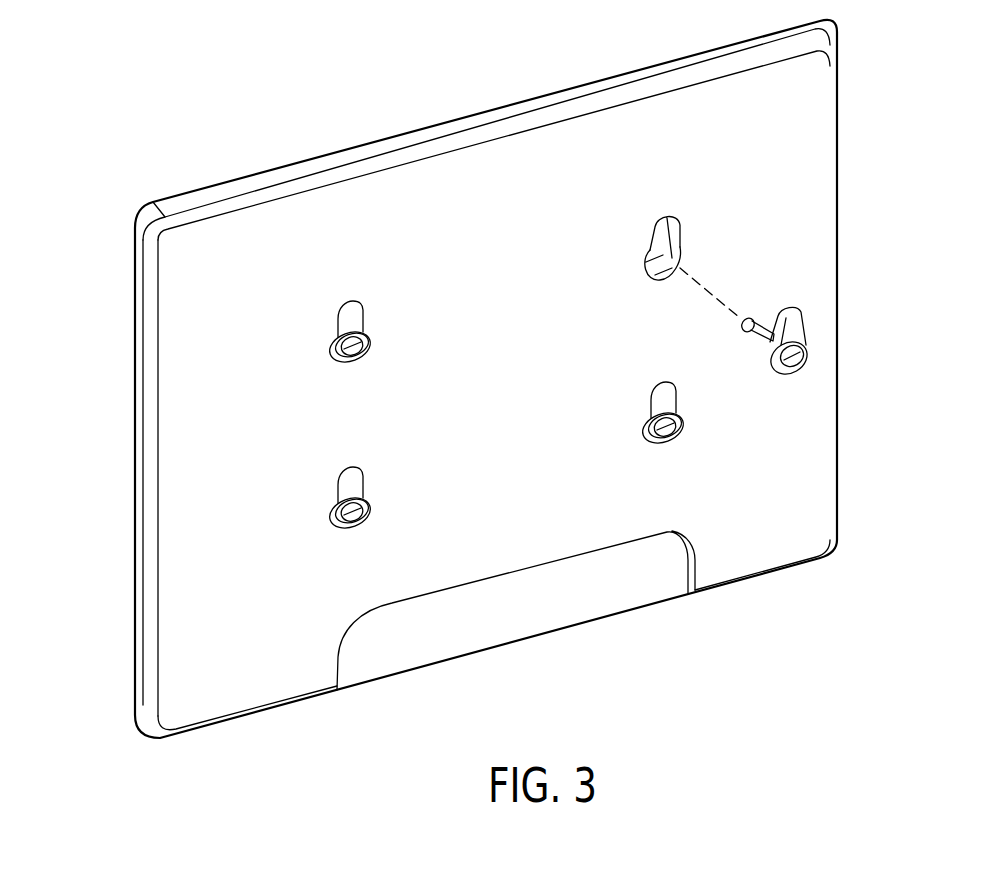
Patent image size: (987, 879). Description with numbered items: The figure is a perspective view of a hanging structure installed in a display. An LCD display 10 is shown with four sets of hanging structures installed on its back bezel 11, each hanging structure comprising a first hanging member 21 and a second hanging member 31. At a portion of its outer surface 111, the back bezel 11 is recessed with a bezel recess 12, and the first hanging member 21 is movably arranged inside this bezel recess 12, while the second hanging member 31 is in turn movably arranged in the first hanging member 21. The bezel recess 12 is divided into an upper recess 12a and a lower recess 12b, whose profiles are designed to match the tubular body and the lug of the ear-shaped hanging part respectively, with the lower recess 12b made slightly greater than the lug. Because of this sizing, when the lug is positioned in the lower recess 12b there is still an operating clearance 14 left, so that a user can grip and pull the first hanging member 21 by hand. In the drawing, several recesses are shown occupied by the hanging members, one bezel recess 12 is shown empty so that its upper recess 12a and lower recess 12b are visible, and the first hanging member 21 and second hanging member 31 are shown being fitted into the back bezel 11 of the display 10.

The LCD display 10 is at (262, 121).
The back bezel 11 is at (368, 167).
The outer surface 111 is at (160, 388).
The bezel recess 12 is at (815, 225).
The upper recess 12a is at (665, 226).
The lower recess 12b is at (670, 260).
The operating clearance 14 is at (333, 525).
The first hanging member 21 is at (802, 327).
The second hanging member 31 is at (803, 362).